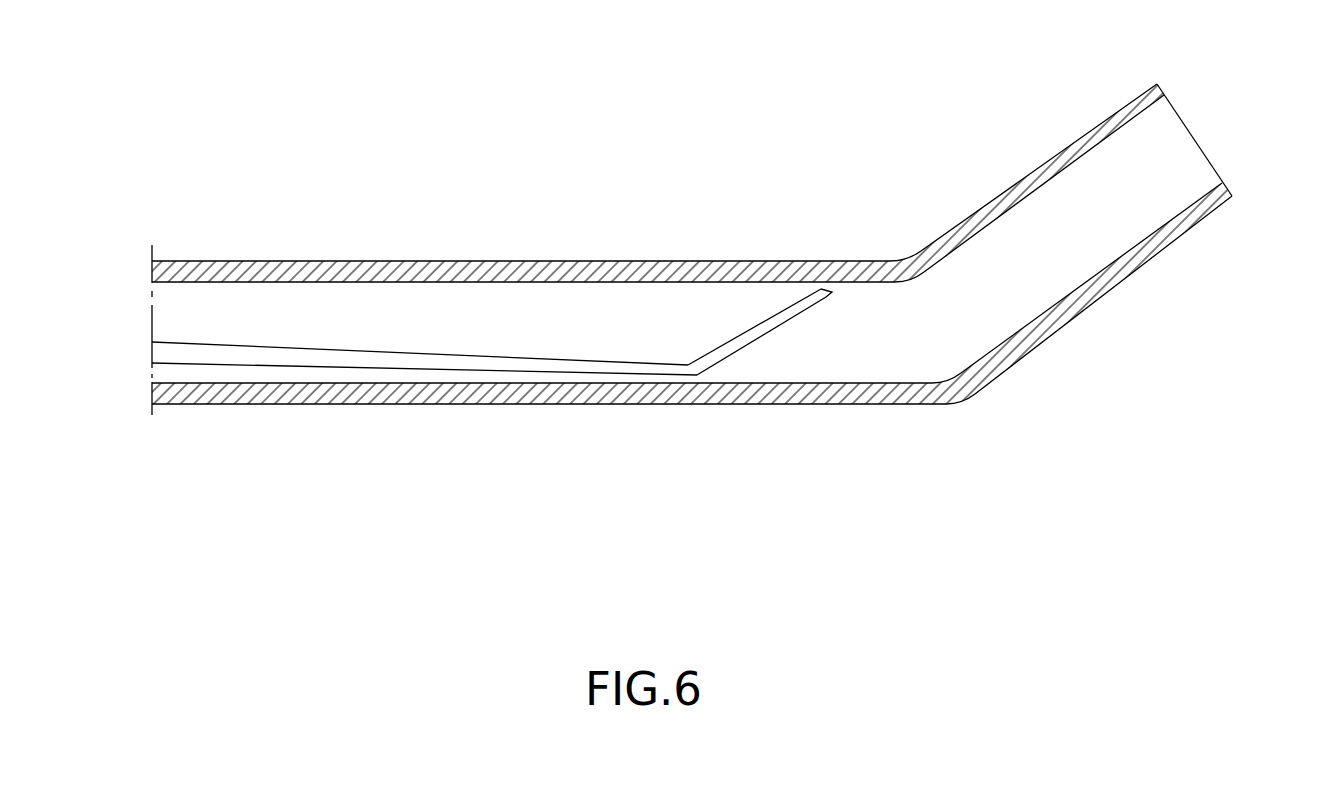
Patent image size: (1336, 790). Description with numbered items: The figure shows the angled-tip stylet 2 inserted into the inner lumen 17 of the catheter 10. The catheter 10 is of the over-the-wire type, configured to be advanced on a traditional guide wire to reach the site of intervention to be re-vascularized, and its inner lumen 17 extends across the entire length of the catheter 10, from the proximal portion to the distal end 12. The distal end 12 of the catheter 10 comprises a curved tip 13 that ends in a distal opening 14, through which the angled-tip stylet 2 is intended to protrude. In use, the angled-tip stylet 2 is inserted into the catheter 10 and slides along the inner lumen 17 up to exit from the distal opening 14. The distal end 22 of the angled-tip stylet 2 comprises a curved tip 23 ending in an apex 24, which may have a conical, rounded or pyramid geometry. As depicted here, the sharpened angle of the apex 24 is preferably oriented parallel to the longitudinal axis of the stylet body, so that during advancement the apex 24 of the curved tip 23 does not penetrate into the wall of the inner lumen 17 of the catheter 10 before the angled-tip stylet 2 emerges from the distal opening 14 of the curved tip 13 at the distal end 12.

The angled-tip stylet 2 is at (535, 284).
The catheter 10 is at (737, 297).
The distal end 12 is at (585, 410).
The curved tip 13 is at (1050, 368).
The distal opening 14 is at (1202, 125).
The inner lumen 17 is at (541, 312).
The distal end 22 is at (455, 340).
The curved tip 23 is at (780, 345).
The apex 24 is at (828, 282).